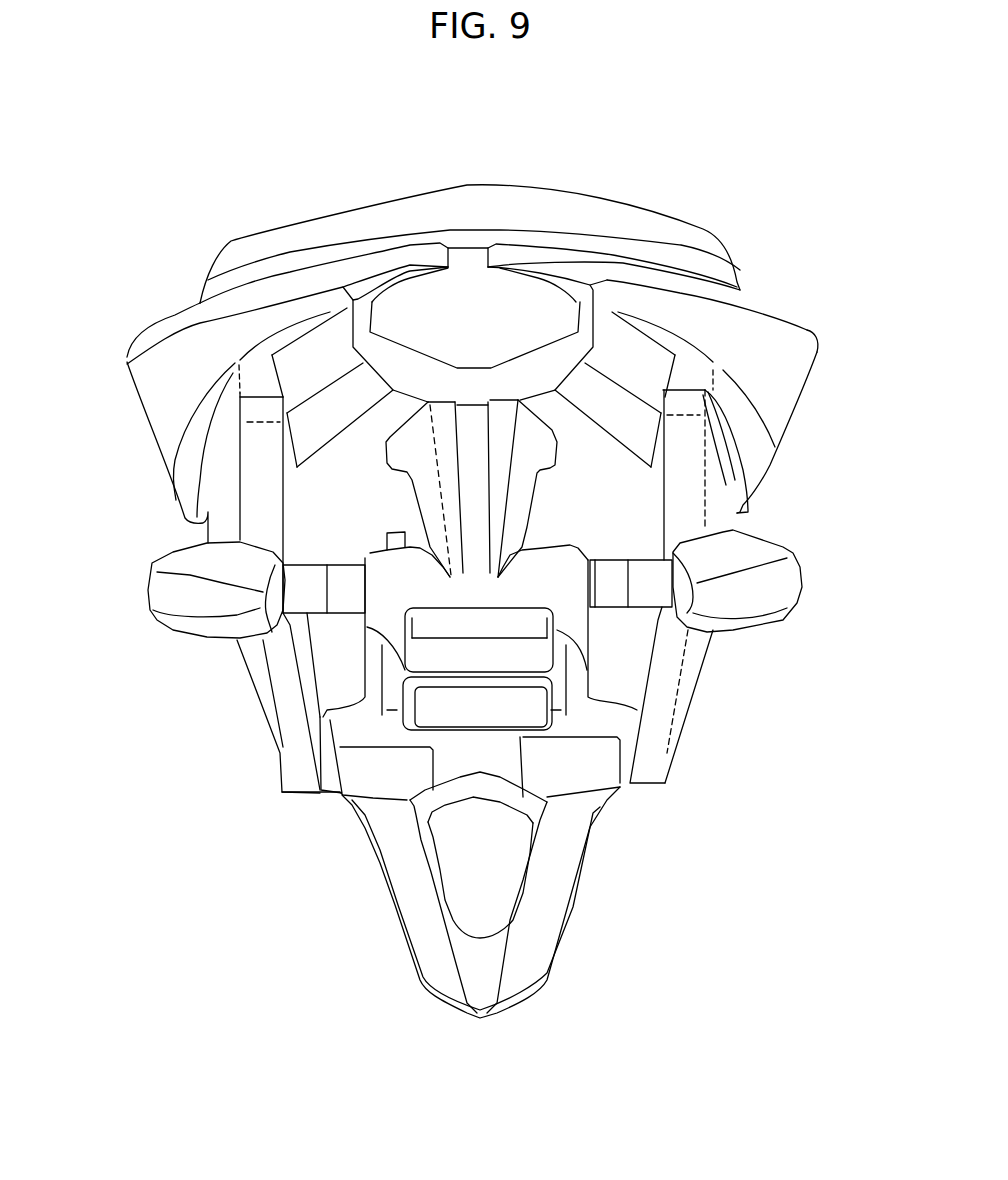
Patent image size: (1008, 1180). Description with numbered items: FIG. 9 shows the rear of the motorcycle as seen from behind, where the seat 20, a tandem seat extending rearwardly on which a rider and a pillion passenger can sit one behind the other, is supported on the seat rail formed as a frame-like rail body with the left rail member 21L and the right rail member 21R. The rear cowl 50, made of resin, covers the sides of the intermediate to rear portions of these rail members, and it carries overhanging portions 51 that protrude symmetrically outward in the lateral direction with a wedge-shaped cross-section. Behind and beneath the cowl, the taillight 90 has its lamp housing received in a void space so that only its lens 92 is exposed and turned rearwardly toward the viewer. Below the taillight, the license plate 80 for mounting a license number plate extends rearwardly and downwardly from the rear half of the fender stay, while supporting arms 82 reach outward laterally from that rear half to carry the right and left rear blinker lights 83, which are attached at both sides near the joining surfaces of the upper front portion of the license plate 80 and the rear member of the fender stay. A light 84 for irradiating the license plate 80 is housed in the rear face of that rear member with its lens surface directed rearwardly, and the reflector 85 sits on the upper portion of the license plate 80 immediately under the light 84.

The seat 20 is at (623, 210).
The rear cowl 50 is at (765, 306).
The overhanging portions 51 is at (127, 362).
The left rail member 21L is at (213, 493).
The right rail member 21R is at (700, 502).
The lens 92 is at (423, 293).
The taillight 90 is at (500, 295).
The light 84 is at (492, 641).
The reflector 85 is at (444, 703).
The rear blinker lights 83 is at (185, 593).
The supporting arms 82 is at (303, 603).
The license plate 80 is at (555, 872).